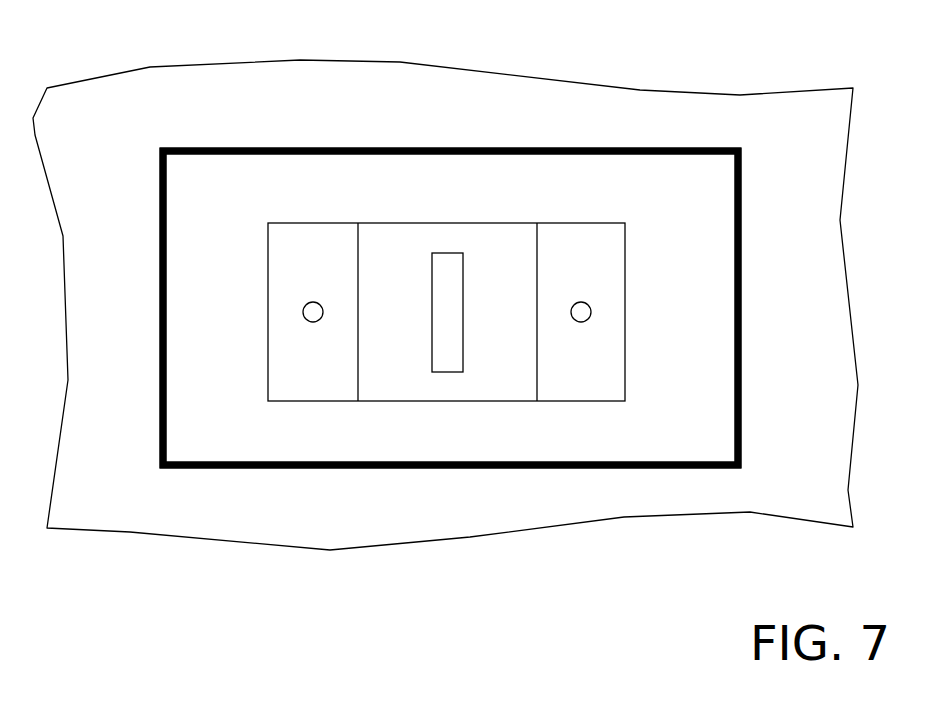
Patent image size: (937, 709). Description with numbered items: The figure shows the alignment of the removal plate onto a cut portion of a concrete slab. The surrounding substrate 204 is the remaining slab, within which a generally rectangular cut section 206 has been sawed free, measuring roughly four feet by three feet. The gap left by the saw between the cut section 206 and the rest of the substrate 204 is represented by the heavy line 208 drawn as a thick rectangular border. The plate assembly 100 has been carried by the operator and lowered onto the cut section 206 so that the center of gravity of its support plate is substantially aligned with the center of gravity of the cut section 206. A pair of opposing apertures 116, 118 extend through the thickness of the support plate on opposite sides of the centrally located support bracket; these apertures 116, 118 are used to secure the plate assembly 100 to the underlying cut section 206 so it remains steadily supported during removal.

The plate assembly 100 is at (598, 409).
The aperture 116 is at (315, 322).
The aperture 118 is at (591, 314).
The substrate 204 is at (162, 97).
The cut section 206 is at (698, 180).
The heavy line 208 is at (745, 252).